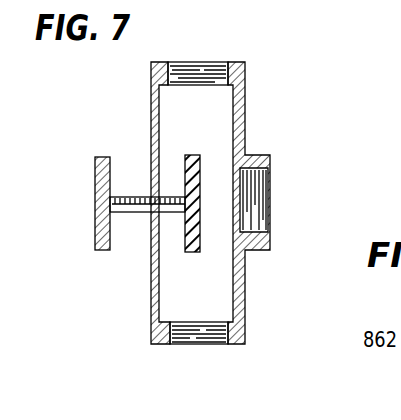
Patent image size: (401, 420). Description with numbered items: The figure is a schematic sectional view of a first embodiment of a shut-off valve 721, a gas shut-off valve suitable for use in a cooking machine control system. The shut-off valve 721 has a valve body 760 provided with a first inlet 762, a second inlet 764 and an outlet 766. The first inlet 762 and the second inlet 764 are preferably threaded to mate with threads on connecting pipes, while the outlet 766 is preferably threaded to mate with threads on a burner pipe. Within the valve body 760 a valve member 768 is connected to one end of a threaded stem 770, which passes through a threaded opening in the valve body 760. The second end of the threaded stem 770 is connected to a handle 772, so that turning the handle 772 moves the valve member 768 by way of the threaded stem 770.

The shut-off valve 721 is at (300, 117).
The valve body 760 is at (151, 128).
The first inlet 762 is at (209, 70).
The second inlet 764 is at (188, 345).
The outlet 766 is at (258, 232).
The valve member 768 is at (193, 155).
The threaded stem 770 is at (131, 214).
The handle 772 is at (95, 230).